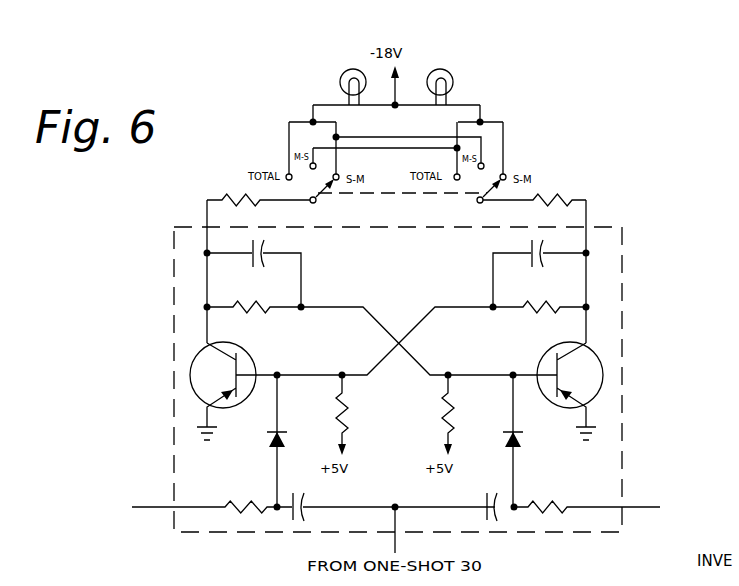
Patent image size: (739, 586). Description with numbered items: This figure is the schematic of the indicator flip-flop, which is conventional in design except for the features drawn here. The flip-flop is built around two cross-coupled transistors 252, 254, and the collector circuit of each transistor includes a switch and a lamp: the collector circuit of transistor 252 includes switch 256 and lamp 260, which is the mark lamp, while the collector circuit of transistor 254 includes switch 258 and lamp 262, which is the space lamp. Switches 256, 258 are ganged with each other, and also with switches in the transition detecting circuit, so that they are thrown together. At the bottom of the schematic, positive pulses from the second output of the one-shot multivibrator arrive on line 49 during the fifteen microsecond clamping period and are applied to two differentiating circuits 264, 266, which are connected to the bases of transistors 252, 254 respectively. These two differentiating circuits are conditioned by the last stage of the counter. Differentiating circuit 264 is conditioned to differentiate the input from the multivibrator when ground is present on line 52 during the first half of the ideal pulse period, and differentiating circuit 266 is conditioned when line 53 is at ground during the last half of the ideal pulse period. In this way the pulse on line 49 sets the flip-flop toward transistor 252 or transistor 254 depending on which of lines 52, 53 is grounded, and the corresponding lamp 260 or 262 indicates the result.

The lamp 260 is at (341, 76).
The lamp 262 is at (450, 72).
The switch 256 is at (330, 197).
The switch 258 is at (475, 195).
The transistor 252 is at (250, 353).
The transistor 254 is at (547, 353).
The differentiating circuit 264 is at (266, 489).
The differentiating circuit 266 is at (525, 491).
The line 52 is at (160, 507).
The line 53 is at (632, 507).
The line 49 is at (395, 522).